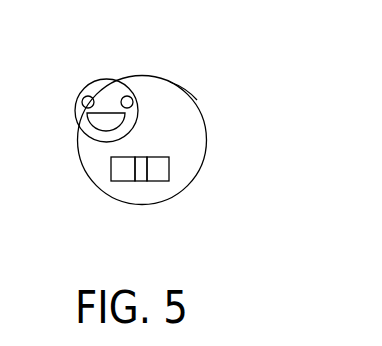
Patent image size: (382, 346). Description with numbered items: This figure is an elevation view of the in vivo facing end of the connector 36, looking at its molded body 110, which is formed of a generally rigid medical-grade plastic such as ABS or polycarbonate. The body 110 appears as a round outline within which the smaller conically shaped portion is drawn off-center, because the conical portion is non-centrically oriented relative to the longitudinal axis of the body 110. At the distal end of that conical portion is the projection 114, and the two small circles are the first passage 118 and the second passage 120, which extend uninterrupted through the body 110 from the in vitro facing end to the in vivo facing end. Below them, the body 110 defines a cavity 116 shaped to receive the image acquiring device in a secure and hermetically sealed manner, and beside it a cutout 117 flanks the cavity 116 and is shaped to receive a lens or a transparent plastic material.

The body 110 is at (203, 147).
The connector 36 is at (182, 90).
The projection 114 is at (100, 120).
The second passage 120 is at (91, 95).
The first passage 118 is at (127, 96).
The cavity 116 is at (137, 173).
The cutout 117 is at (155, 180).